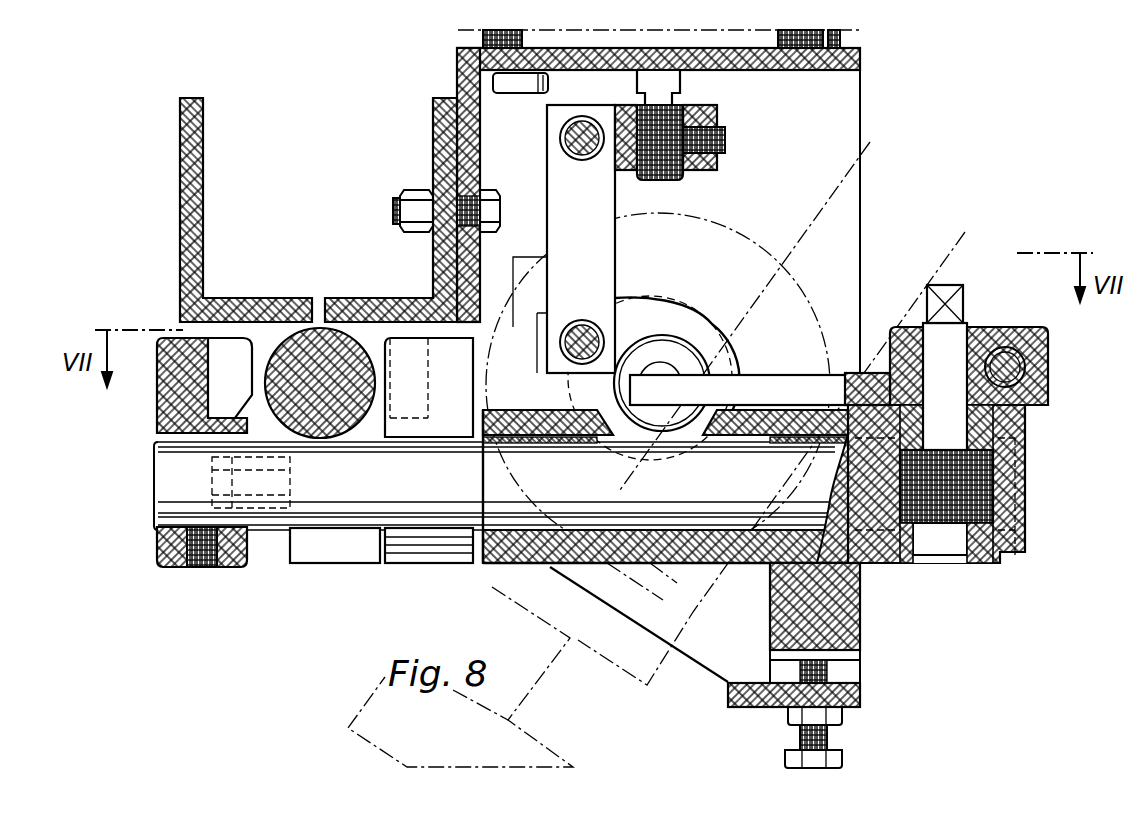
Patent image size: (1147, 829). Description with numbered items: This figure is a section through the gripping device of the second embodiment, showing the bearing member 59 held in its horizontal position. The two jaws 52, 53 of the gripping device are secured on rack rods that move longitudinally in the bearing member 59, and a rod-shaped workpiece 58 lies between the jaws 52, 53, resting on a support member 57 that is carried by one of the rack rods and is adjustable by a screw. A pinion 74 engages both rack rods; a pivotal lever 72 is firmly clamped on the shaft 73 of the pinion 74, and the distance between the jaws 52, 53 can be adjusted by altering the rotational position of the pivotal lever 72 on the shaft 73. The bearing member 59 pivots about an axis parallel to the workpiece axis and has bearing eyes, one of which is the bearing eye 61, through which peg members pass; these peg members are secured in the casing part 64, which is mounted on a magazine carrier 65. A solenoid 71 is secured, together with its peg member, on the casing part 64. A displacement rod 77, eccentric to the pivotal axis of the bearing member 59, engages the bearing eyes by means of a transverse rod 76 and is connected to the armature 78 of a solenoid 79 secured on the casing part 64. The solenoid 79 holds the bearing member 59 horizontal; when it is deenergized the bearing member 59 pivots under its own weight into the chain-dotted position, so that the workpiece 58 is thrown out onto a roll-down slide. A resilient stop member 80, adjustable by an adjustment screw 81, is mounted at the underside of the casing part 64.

The jaw 52 is at (220, 350).
The jaw 53 is at (378, 322).
The support member 57 is at (336, 535).
The workpiece 58 is at (300, 343).
The bearing member 59 is at (522, 563).
The bearing eye 61 is at (697, 332).
The casing part 64 is at (812, 146).
The magazine carrier 65 is at (433, 148).
The solenoid 71 is at (795, 225).
The pivotal lever 72 is at (1042, 346).
The shaft 73 is at (962, 300).
The pinion 74 is at (968, 494).
The transverse rod 76 is at (600, 320).
The displacement rod 77 is at (600, 194).
The armature 78 is at (668, 180).
The solenoid 79 is at (842, 40).
The resilient stop member 80 is at (845, 604).
The adjustment screw 81 is at (820, 738).